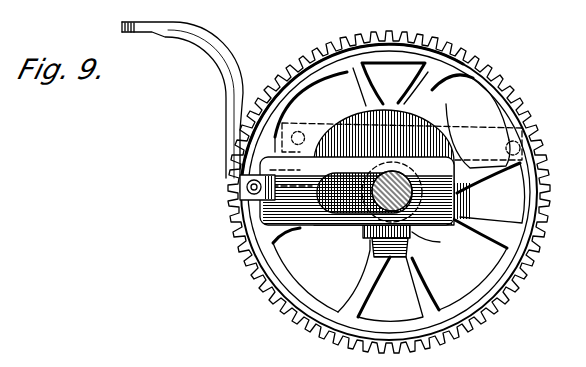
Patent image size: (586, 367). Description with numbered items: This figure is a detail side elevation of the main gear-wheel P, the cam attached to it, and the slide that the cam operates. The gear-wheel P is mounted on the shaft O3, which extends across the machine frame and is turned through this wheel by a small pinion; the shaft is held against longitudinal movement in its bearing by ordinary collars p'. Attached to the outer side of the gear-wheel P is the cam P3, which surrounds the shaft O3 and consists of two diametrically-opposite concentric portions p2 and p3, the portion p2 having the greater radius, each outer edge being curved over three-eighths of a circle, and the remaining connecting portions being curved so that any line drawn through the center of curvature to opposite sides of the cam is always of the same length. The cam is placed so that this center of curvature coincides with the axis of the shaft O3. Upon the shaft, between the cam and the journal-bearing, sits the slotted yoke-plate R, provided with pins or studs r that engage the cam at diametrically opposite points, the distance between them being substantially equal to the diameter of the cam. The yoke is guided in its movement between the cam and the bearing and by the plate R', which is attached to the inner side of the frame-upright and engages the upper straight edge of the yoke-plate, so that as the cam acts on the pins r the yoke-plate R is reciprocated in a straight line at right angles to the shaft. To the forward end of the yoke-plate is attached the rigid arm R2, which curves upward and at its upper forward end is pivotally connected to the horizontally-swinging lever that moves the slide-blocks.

The gear-wheel P is at (268, 328).
The concentric portion of cam p2 is at (391, 100).
The concentric portion of cam p3 is at (420, 247).
The pins or studs r is at (483, 197).
The cam P3 is at (345, 142).
The slotted yoke-plate R is at (357, 191).
The shaft O3 is at (361, 224).
The rigid arm R2 is at (234, 91).
The plate R' is at (402, 135).
The collars p' is at (406, 146).